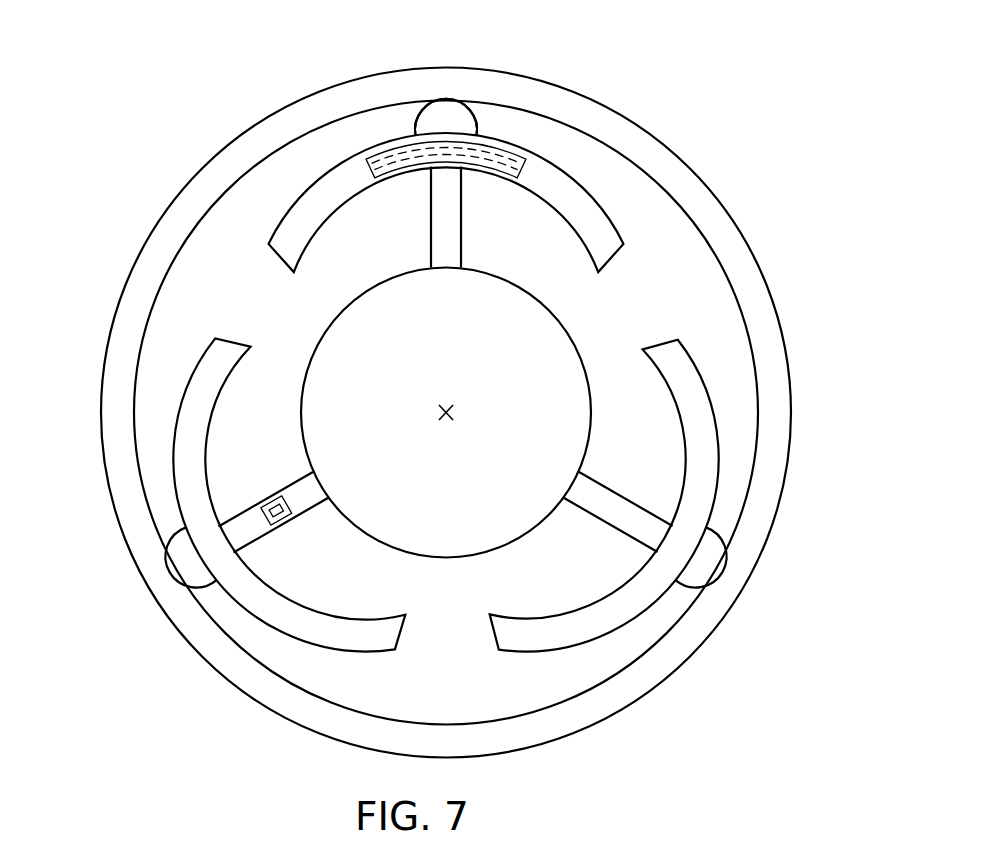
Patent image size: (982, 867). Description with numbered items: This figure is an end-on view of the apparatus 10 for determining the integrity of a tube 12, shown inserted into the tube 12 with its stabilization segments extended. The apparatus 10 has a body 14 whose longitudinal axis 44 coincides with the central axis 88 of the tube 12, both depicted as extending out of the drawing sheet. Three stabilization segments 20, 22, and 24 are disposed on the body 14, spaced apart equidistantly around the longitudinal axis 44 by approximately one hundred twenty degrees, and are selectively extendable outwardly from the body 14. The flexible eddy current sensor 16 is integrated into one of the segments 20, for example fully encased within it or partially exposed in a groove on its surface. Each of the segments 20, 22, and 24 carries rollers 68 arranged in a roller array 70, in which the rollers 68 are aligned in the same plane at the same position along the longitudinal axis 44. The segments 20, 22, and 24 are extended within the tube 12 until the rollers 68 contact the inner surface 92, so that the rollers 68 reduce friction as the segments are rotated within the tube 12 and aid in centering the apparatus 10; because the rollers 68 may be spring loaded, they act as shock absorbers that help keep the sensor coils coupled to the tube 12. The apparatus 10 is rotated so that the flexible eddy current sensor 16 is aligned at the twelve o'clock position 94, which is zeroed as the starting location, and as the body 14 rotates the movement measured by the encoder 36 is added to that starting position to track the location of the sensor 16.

The apparatus 10 is at (288, 403).
The tube 12 is at (155, 47).
The body 14 is at (562, 357).
The flexible eddy current sensor 16 is at (473, 150).
The stabilization segment 20 is at (312, 180).
The stabilization segment 22 is at (688, 505).
The stabilization segment 24 is at (190, 478).
The encoder 36 is at (287, 504).
The longitudinal axis of the body 44 is at (439, 420).
The roller 68 is at (458, 122).
The roller array 70 is at (693, 134).
The central axis of the tube 88 is at (444, 408).
The inner surface of the tube 92 is at (190, 250).
The twelve o'clock position 94 is at (429, 90).